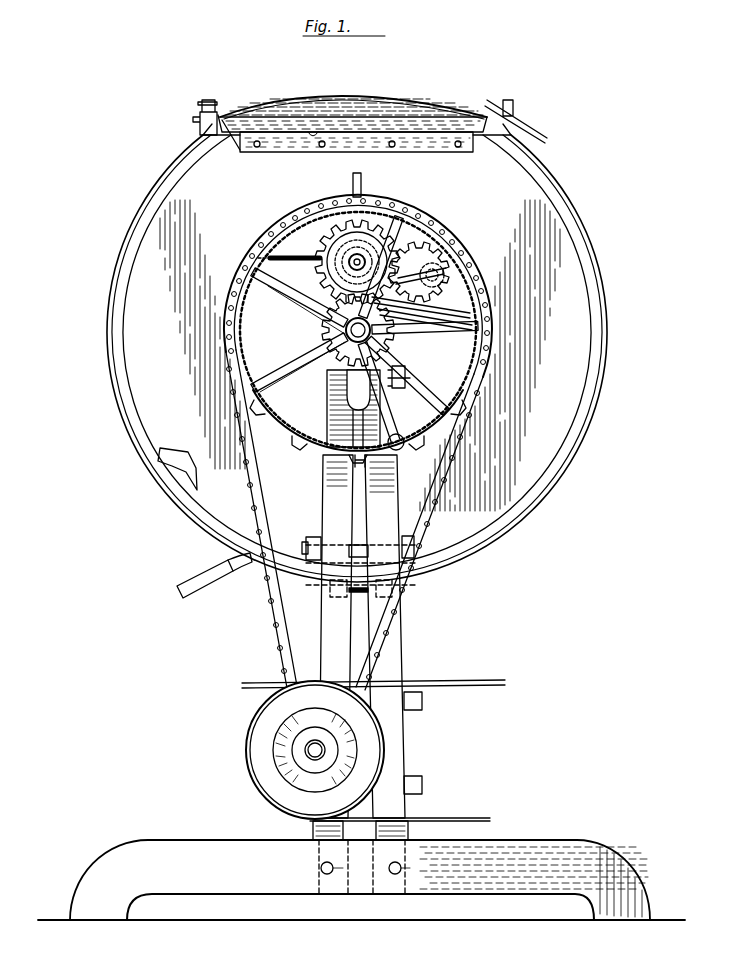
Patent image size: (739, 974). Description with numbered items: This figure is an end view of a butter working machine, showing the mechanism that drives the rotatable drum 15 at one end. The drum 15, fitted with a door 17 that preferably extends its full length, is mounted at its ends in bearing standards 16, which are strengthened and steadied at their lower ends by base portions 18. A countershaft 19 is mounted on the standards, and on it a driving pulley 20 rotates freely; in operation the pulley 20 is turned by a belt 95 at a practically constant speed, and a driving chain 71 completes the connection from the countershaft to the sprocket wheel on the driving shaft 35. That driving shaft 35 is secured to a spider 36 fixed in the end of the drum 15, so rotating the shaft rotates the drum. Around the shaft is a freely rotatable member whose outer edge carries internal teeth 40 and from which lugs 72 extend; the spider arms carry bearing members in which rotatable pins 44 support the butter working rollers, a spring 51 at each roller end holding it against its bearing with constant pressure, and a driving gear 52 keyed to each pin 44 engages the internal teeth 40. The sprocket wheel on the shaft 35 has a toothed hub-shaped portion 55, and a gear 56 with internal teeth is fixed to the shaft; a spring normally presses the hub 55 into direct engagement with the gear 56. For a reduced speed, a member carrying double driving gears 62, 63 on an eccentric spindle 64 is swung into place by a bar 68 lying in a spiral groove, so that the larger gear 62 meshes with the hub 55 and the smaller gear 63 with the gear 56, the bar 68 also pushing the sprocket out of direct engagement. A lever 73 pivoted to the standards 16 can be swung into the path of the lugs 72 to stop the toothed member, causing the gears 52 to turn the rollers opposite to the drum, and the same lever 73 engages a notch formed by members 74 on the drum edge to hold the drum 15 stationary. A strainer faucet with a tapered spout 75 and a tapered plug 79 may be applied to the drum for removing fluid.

The drum 15 is at (167, 222).
The bearing standards 16 is at (393, 657).
The door 17 is at (384, 110).
The base portions 18 is at (533, 841).
The countershaft 19 is at (307, 751).
The driving pulley 20 is at (258, 730).
The driving shaft 35 is at (345, 328).
The spider 36 is at (412, 258).
The internal teeth 40 is at (468, 360).
The pin or shaft 44 is at (442, 263).
The spring 51 is at (243, 298).
The driving gear 52 is at (306, 430).
The hub-shaped portion 55 is at (472, 322).
The gear 56 is at (470, 312).
The driving gear 62 is at (334, 243).
The driving gear 63 is at (300, 305).
The spindle or shaft 64 is at (372, 258).
The bar 68 is at (296, 254).
The driving chain 71 is at (278, 648).
The lugs 72 is at (364, 178).
The lever 73 is at (391, 605).
The members 74 is at (170, 478).
The spout 75 is at (246, 572).
The tapered plug 79 is at (205, 584).
The belt 95 is at (458, 688).